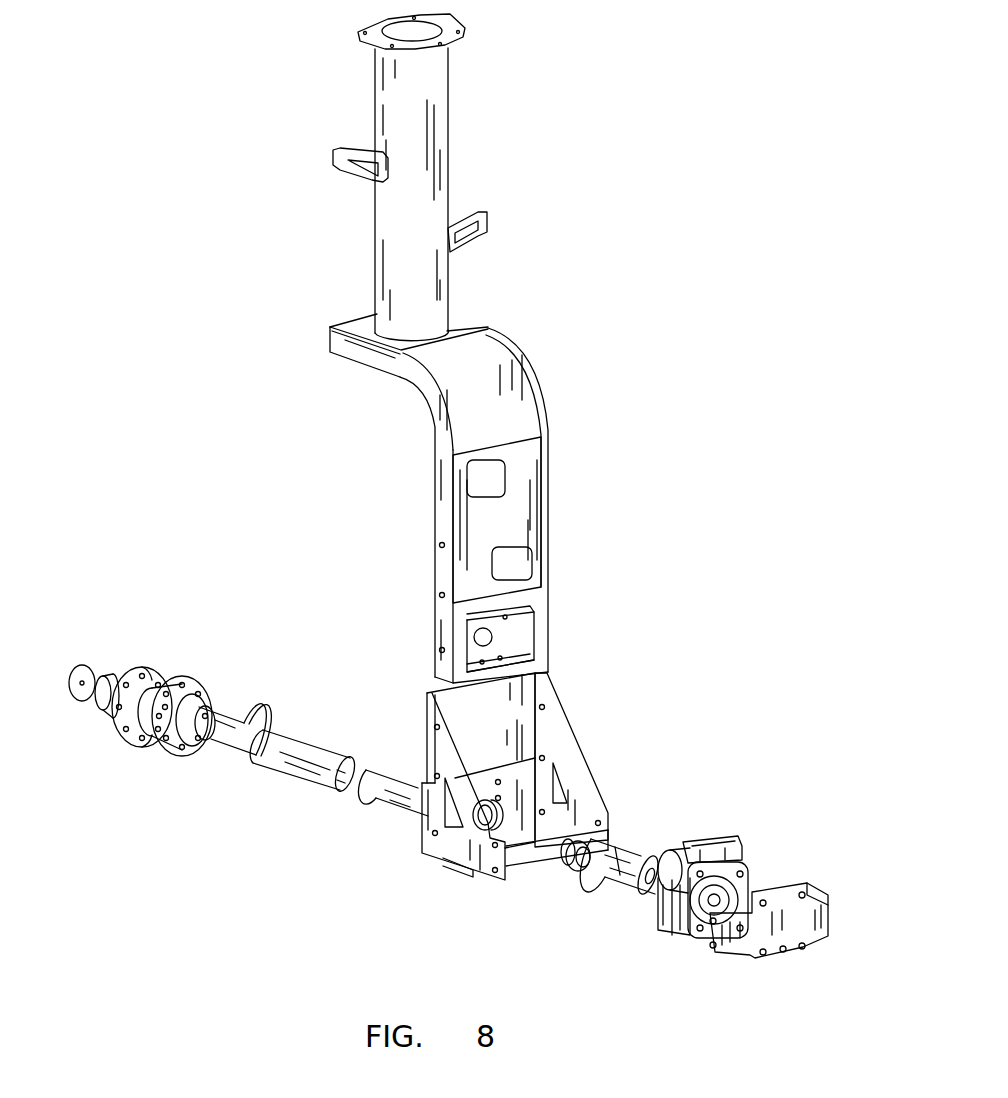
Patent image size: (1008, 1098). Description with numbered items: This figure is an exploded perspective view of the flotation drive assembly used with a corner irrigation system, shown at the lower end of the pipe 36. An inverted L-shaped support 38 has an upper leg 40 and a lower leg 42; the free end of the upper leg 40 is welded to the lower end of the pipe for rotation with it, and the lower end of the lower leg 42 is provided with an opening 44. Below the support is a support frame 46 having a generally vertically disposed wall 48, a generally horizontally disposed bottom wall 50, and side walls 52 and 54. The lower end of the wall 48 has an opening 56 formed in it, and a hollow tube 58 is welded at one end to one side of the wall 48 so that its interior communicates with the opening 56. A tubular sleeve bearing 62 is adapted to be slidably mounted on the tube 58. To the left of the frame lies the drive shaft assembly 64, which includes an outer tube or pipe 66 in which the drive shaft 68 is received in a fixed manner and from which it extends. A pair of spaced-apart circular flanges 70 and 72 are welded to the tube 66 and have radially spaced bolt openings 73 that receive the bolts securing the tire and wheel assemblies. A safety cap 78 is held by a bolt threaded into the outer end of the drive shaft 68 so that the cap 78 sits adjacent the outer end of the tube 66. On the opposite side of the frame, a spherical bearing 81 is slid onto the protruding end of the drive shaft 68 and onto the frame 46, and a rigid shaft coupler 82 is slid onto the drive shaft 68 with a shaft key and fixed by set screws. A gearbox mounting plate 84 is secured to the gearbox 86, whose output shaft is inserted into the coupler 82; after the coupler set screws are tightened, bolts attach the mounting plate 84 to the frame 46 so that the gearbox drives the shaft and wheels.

The pipe 36 is at (430, 122).
The inverted L-shaped support 38 is at (516, 316).
The upper leg 40 is at (365, 348).
The lower leg 42 is at (520, 496).
The opening 44 is at (495, 632).
The support frame 46 is at (596, 726).
The vertically disposed wall 48 is at (460, 745).
The bottom wall 50 is at (530, 872).
The side wall 52 is at (440, 822).
The side wall 54 is at (609, 760).
The opening 56 is at (498, 817).
The hollow tube 58 is at (395, 790).
The tubular sleeve bearing 62 is at (300, 764).
The drive shaft assembly 64 is at (157, 632).
The outer tube 66 is at (194, 705).
The drive shaft 68 is at (228, 715).
The circular flange 70 is at (125, 745).
The circular flange 72 is at (178, 752).
The bolt openings 73 is at (182, 675).
The safety cap 78 is at (67, 668).
The spherical bearing 81 is at (566, 872).
The rigid shaft coupler 82 is at (615, 884).
The gearbox mounting plate 84 is at (793, 915).
The gearbox 86 is at (748, 880).